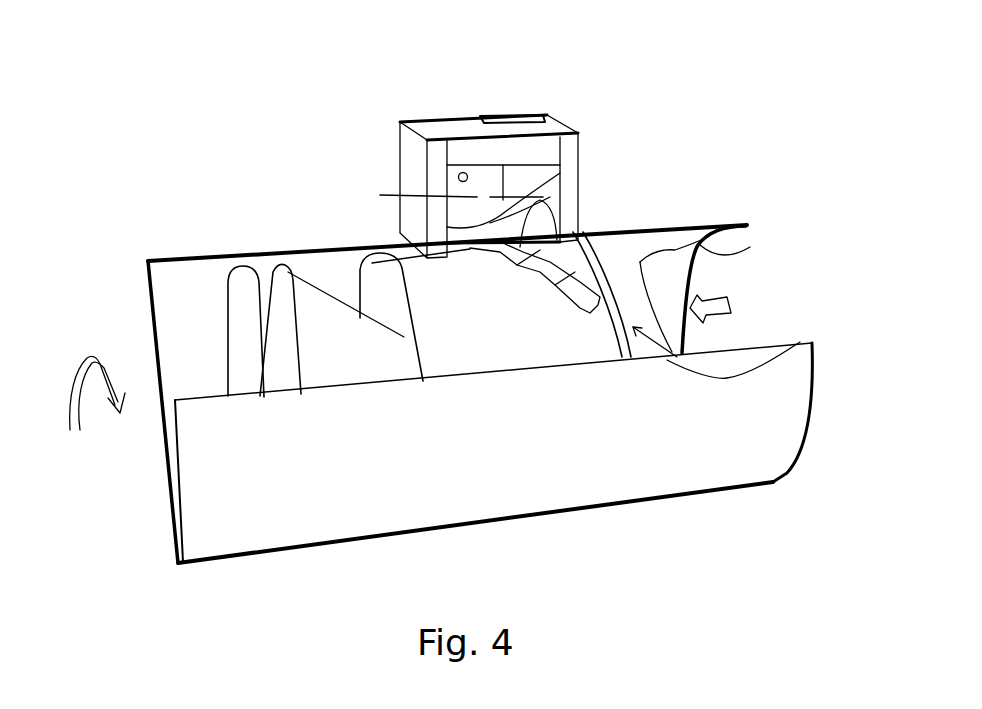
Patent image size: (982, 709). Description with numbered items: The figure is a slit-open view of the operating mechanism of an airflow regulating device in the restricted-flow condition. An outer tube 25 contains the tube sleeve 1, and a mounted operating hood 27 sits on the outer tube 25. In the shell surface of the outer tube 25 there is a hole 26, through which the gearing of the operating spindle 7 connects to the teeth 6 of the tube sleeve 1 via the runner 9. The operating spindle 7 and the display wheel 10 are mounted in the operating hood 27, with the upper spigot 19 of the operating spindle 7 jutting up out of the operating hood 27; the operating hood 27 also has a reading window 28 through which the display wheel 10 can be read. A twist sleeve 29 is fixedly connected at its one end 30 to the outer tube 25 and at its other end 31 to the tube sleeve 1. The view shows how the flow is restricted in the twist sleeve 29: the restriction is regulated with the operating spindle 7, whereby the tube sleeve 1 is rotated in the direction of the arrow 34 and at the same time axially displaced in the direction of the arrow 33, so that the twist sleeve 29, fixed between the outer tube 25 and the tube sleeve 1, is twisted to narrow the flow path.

The tube sleeve 1 is at (700, 258).
The teeth 6 is at (660, 220).
The operating spindle 7 is at (567, 190).
The runner 9 is at (570, 182).
The display wheel 10 is at (380, 193).
The upper spigot 19 is at (550, 117).
The outer tube 25 is at (697, 450).
The hole 26 is at (580, 215).
The operating hood 27 is at (403, 140).
The reading window 28 is at (467, 117).
The twist sleeve 29 is at (317, 323).
The one end 30 is at (264, 258).
The other end 31 is at (795, 343).
The arrow 33 is at (722, 310).
The arrow 34 is at (82, 358).